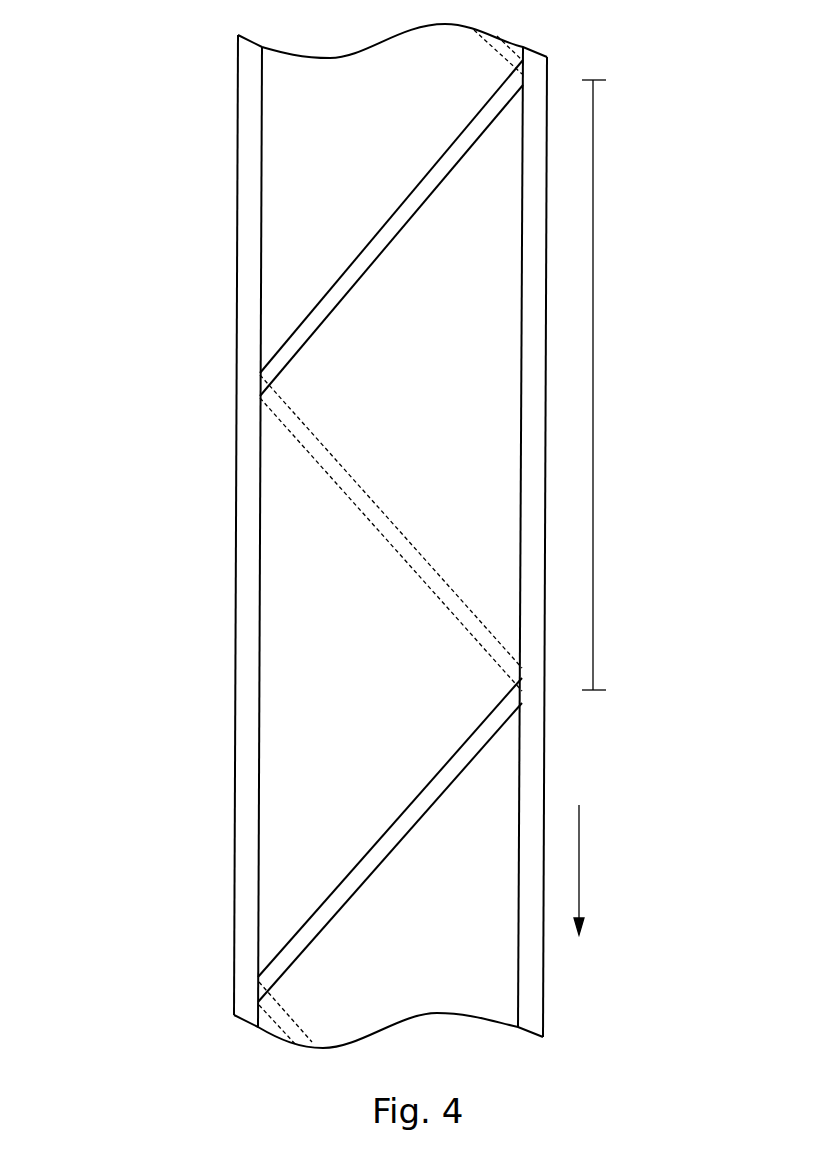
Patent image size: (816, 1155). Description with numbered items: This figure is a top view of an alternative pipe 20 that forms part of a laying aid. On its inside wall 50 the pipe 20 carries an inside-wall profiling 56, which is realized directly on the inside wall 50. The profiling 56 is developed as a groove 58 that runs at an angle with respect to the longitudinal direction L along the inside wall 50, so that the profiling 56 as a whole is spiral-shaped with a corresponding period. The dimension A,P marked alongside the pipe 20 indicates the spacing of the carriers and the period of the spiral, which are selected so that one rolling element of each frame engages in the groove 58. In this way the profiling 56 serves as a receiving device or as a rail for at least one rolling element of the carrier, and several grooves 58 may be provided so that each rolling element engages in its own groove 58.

The pipe 20 is at (284, 536).
The inside wall 50 is at (292, 536).
The inside-wall profiling 56 is at (272, 538).
The groove 58 is at (272, 538).
The spacing of the carriers and period of the profiling A,P is at (652, 385).
The longitudinal direction L is at (616, 870).